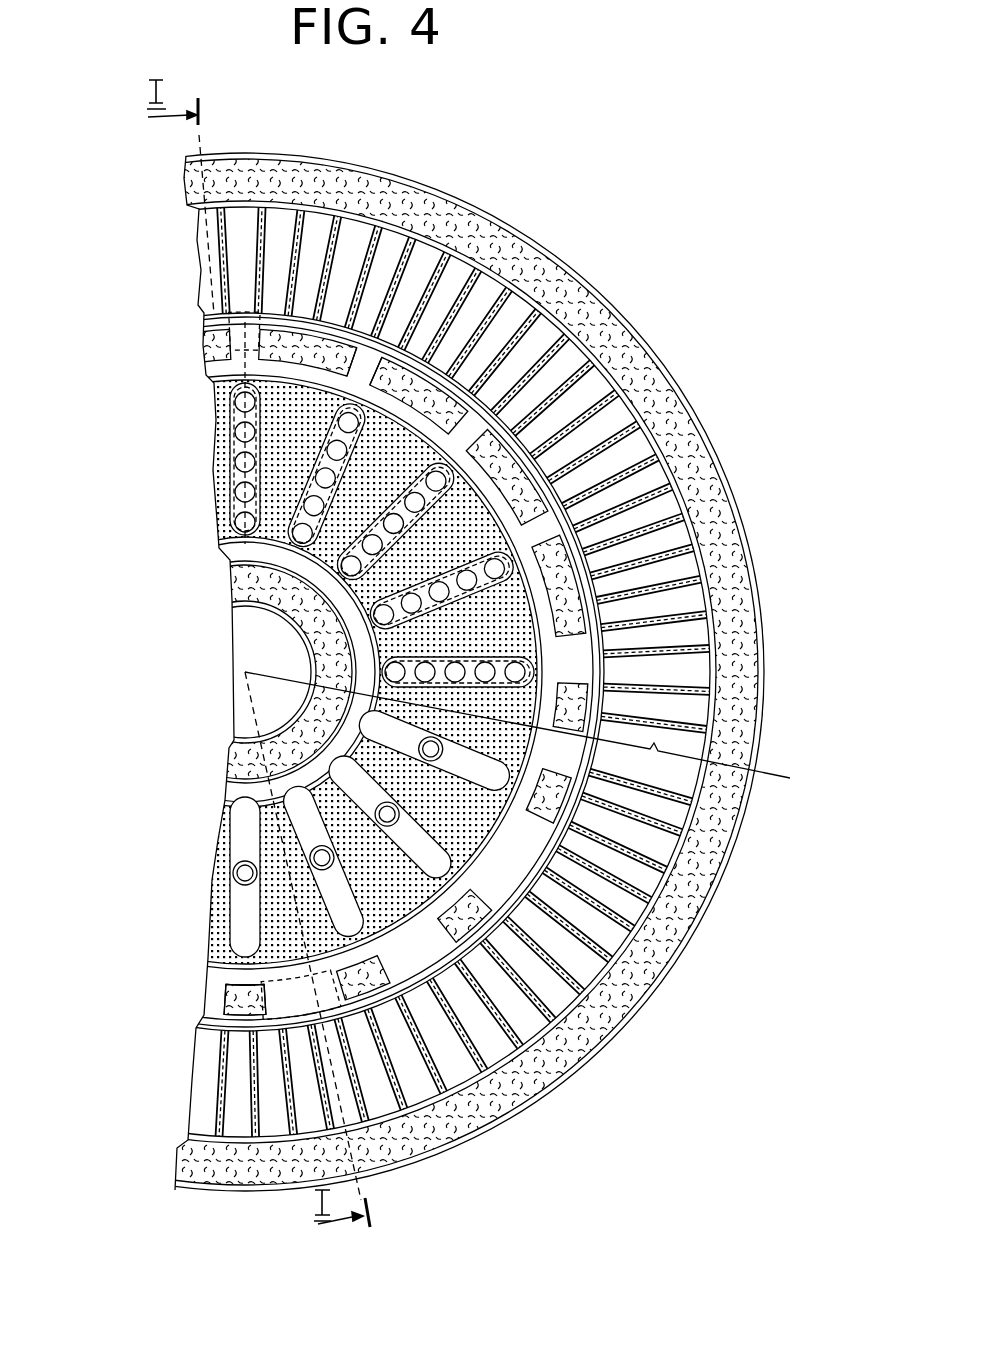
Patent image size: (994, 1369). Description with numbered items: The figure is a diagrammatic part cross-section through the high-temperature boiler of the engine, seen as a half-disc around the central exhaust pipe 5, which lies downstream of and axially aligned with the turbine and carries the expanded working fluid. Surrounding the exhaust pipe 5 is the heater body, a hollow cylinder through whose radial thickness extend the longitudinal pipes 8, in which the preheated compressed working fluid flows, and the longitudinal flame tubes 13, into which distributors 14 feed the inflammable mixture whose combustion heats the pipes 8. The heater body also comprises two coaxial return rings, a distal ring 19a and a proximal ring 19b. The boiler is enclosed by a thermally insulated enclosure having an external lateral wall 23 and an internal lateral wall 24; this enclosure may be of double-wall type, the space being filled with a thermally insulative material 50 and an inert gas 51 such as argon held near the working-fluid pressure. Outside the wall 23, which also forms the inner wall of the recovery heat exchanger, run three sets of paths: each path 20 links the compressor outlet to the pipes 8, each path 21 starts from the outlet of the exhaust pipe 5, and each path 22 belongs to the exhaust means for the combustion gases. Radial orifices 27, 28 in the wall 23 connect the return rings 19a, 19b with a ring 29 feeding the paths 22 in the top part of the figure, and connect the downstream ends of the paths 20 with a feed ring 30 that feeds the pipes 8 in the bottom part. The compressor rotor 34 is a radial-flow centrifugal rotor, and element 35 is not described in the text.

The exhaust pipe 5 is at (258, 646).
The longitudinal pipes 8 is at (393, 900).
The longitudinal flame tubes 13 is at (240, 470).
The distributors 14 is at (240, 918).
The distal return ring 19a is at (223, 372).
The proximal return ring 19b is at (240, 788).
The path of the first set of paths 20 is at (287, 223).
The path of the second set of paths 21 is at (242, 217).
The path of the third set of paths 22 is at (321, 232).
The external lateral wall 23 is at (198, 349).
The internal lateral wall 24 is at (222, 756).
The radial orifice 27 is at (367, 367).
The radial orifice 28 is at (302, 1007).
The ring 29 is at (203, 327).
The feed ring 30 is at (215, 1035).
The radial-flow centrifugal rotor 34 is at (255, 577).
The hub ring outer boundary 35 is at (242, 672).
The thermally insulative material 50 is at (225, 987).
The inert gas 51 is at (186, 972).